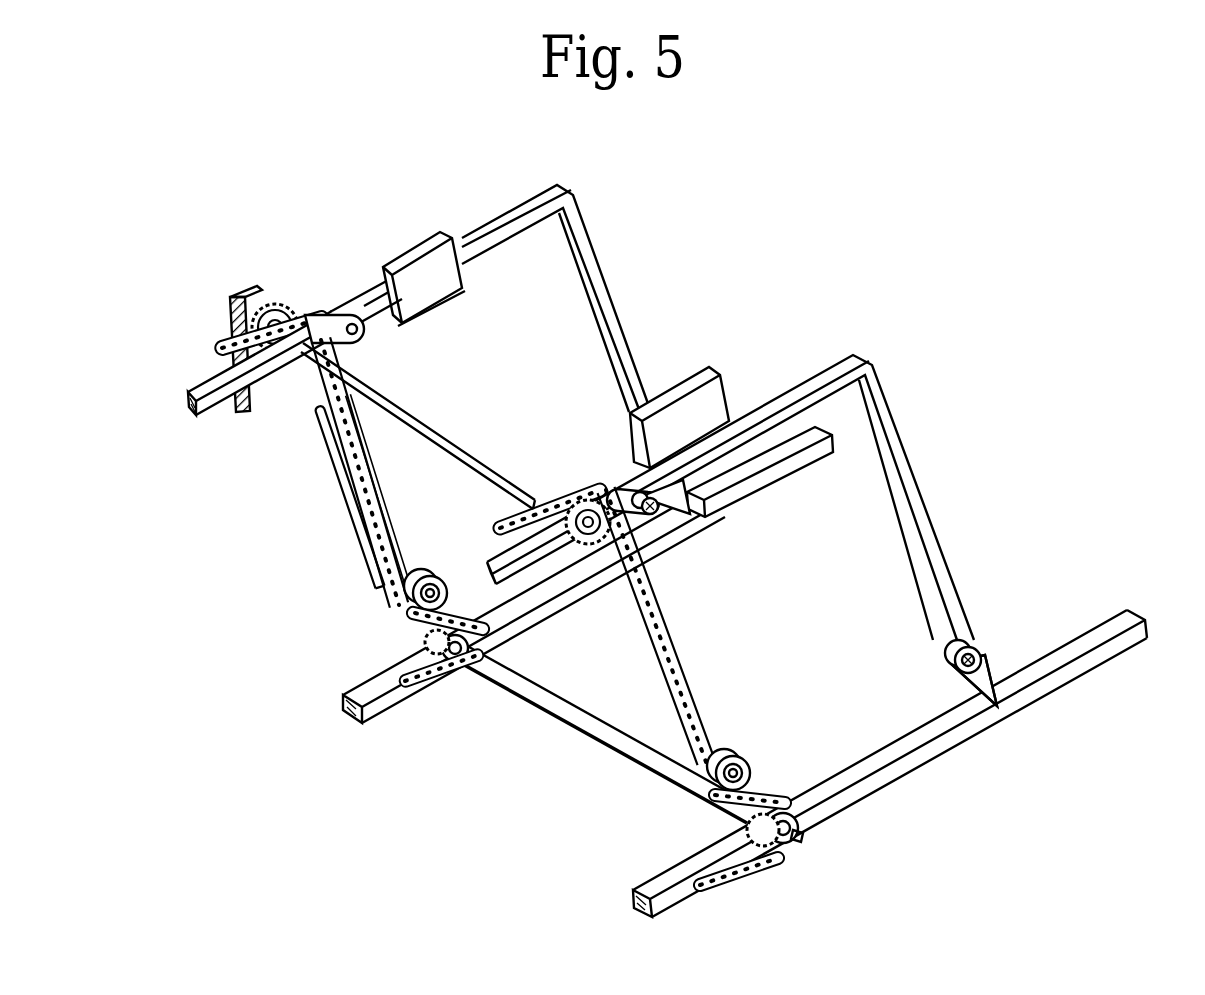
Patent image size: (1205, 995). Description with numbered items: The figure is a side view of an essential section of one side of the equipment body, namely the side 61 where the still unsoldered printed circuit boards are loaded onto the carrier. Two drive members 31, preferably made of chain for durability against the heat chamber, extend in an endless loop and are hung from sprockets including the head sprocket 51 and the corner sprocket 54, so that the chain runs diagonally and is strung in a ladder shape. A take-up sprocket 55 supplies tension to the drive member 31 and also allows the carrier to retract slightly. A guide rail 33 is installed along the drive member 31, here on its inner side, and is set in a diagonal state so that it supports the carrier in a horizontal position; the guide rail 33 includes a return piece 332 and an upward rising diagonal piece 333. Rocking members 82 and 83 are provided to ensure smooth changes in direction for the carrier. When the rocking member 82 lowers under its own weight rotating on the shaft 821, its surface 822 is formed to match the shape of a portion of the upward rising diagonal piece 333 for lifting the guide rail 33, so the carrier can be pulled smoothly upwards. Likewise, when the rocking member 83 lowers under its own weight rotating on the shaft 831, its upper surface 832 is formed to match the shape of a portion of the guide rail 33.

The drive member 31 is at (388, 500).
The guide rail 33 is at (208, 384).
The head sprocket 51 is at (262, 358).
The corner sprocket 54 is at (413, 633).
The take-up sprocket 55 is at (438, 575).
The side of the equipment body 61 is at (762, 278).
The rocking member 82 is at (690, 490).
The shaft 821 is at (977, 660).
The surface 822 is at (990, 672).
The rocking member 83 is at (335, 318).
The shaft 831 is at (364, 331).
The upper surface 832 is at (327, 322).
The return piece 332 is at (887, 782).
The upward rising diagonal piece 333 is at (607, 278).